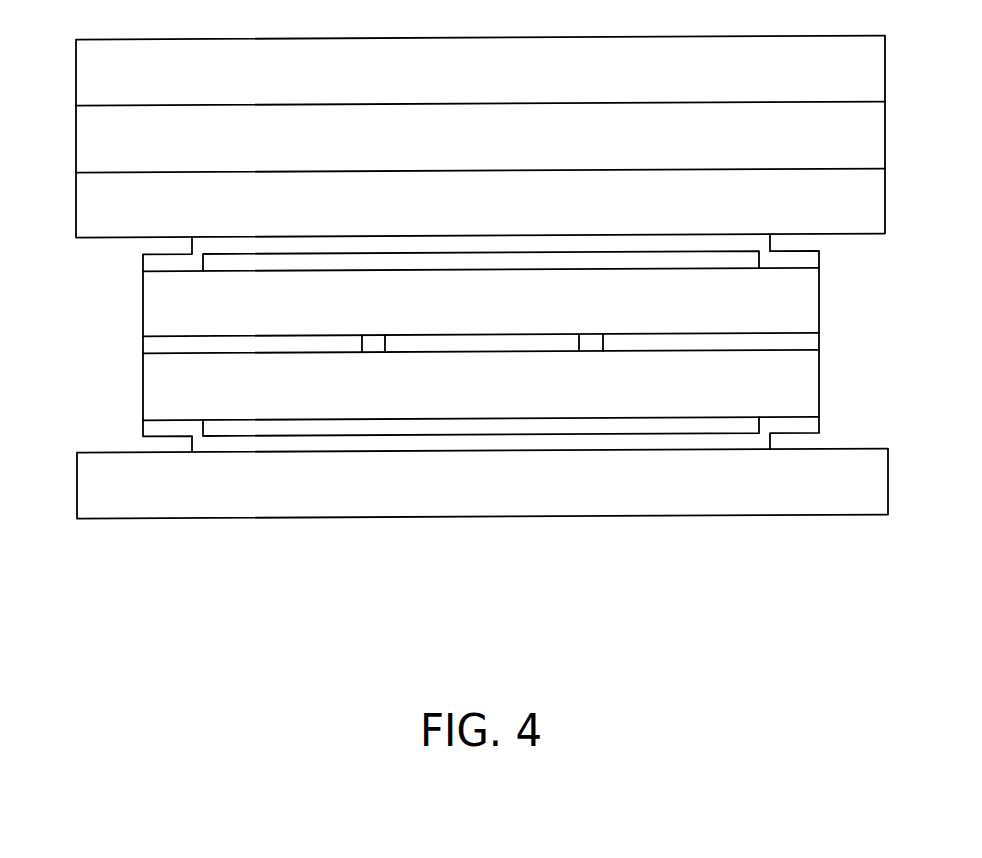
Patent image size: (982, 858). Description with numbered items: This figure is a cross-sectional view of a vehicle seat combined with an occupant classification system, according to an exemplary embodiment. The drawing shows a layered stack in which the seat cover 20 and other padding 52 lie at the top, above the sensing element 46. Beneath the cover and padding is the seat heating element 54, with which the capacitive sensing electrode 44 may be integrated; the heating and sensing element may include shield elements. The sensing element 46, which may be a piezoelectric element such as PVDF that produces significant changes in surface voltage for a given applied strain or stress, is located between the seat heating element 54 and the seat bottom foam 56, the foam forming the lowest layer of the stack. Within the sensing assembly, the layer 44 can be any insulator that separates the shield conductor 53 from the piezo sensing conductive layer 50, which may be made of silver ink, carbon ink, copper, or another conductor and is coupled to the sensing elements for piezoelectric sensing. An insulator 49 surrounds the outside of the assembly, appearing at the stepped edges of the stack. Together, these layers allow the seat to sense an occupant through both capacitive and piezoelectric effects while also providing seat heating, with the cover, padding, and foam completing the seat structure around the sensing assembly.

The seat cover 20 is at (90, 65).
The padding 52 is at (92, 144).
The seat heating element 54 is at (92, 210).
The insulator around the outside of the assembly 49 is at (807, 260).
The shield conductor 53 is at (223, 263).
The capacitive sensing electrode 44 is at (155, 317).
The sensing element 46 is at (155, 374).
The piezoelectric sensing conductive layer 50 is at (461, 343).
The seat bottom foam 56 is at (93, 490).